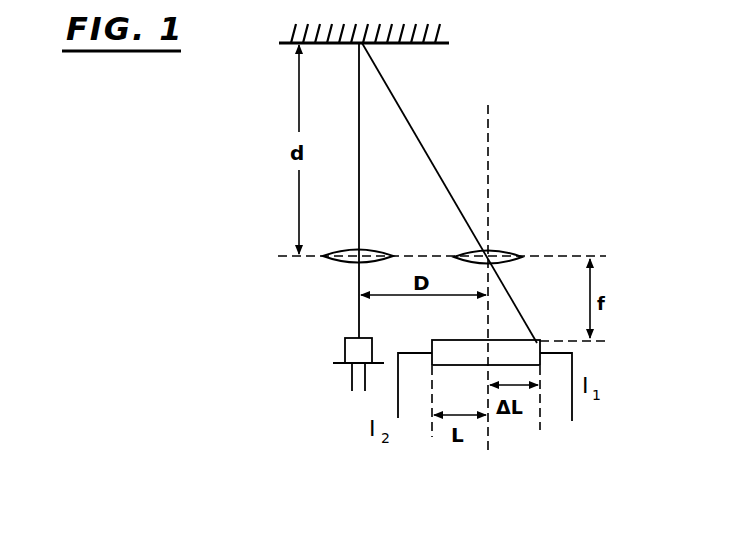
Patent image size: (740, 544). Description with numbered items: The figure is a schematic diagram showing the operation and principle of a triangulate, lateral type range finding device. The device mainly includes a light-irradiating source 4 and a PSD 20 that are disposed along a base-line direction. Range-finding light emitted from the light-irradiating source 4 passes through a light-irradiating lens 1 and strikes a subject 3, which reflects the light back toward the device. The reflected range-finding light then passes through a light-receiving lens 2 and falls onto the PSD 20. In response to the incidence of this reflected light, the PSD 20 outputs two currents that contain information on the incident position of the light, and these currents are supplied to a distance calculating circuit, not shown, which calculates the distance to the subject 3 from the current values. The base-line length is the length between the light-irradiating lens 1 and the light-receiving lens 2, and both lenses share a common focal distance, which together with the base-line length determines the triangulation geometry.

The light-irradiating lens 1 is at (378, 246).
The light-receiving lens 2 is at (510, 250).
The subject 3 is at (440, 34).
The light-irradiating source 4 is at (345, 351).
The PSD 20 is at (442, 340).